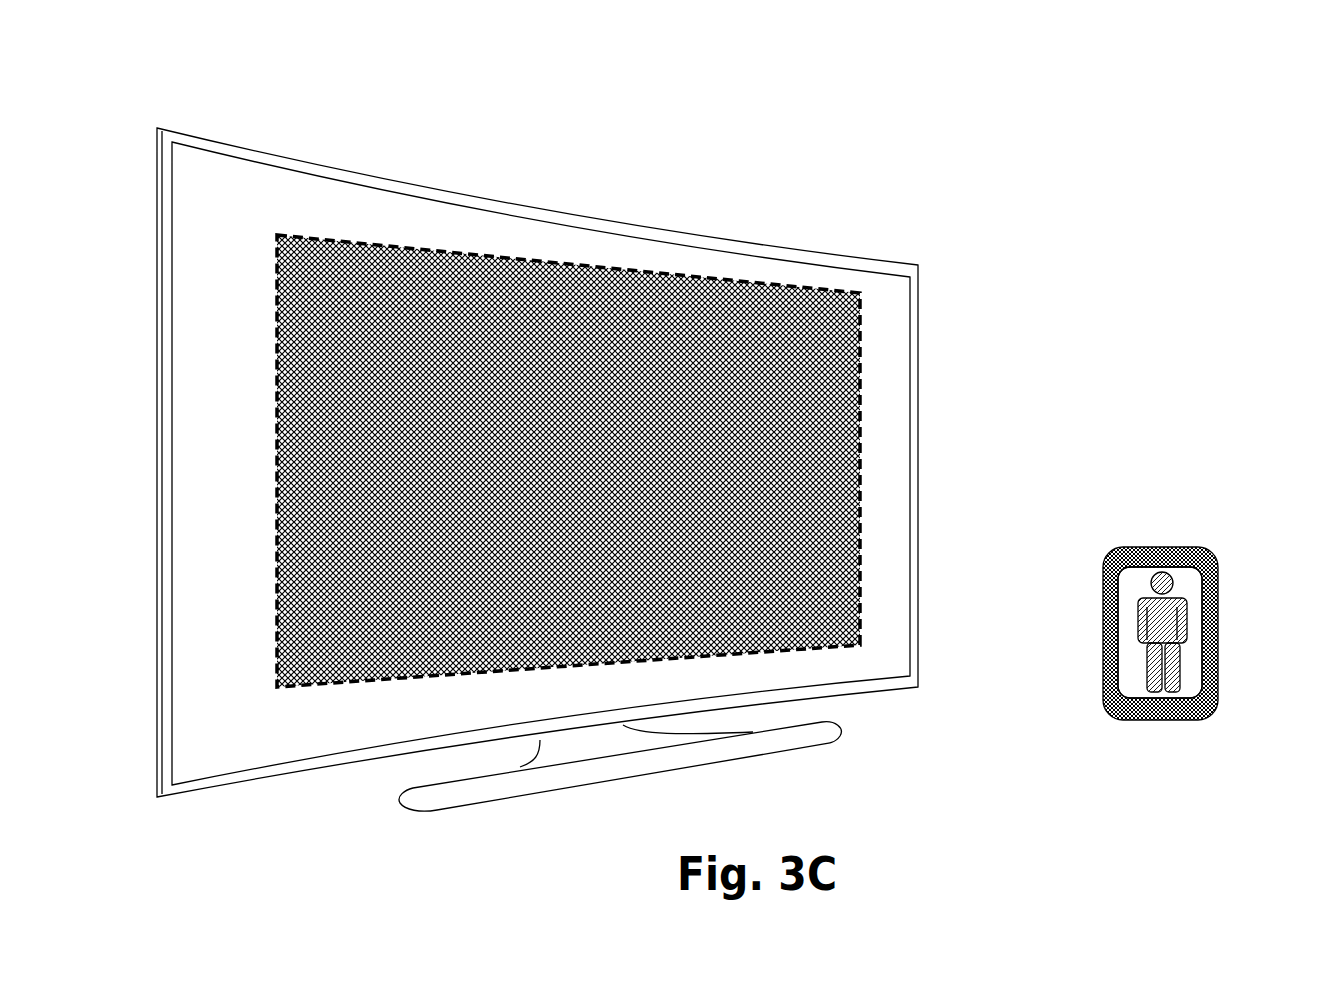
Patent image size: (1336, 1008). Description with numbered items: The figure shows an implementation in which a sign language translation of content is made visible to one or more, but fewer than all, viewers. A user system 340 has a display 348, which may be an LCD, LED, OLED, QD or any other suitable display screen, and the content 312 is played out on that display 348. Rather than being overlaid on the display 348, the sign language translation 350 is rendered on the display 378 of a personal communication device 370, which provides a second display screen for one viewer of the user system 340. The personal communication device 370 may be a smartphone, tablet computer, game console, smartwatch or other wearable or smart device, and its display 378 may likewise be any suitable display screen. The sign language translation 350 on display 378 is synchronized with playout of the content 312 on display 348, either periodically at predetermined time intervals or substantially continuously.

The user system 340 is at (537, 412).
The display 348 is at (290, 202).
The content 312 is at (381, 375).
The personal communication device 370 is at (1175, 559).
The display 378 is at (1132, 583).
The sign language translation 350 is at (1138, 621).